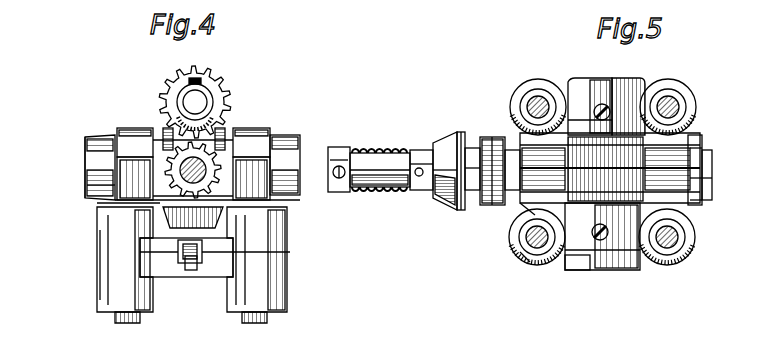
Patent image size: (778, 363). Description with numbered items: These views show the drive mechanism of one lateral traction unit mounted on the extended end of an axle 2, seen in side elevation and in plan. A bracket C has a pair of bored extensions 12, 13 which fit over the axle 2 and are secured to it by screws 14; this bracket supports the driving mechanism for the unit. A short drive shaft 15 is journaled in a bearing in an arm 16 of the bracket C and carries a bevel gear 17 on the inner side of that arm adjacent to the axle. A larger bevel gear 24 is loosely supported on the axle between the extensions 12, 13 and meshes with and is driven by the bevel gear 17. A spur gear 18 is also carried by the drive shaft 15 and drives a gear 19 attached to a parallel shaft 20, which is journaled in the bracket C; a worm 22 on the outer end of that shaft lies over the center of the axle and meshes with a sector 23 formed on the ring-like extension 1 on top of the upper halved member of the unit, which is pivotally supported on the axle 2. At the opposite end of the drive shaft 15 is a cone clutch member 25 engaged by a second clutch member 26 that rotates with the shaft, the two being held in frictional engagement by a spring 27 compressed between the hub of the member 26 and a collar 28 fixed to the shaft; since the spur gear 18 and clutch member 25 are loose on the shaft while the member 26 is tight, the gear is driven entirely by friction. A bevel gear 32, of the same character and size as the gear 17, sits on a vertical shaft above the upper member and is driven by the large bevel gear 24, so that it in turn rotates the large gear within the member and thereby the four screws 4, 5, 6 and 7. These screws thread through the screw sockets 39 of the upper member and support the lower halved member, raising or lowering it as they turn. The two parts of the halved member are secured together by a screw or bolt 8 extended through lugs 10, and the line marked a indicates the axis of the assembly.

In FIG. 4, the ring like extension 1 is at (226, 268).
In FIG. 5, the ring like extension 1 is at (688, 201).
In FIG. 4, the axle 2 is at (100, 137).
In FIG. 5, the axle 2 is at (640, 84).
In FIG. 5, the screw 4 is at (525, 104).
In FIG. 5, the screw 5 is at (520, 252).
In FIG. 5, the screw 6 is at (678, 243).
In FIG. 5, the screw 7 is at (684, 104).
In FIG. 4, the screw or bolt 8 is at (178, 250).
In FIG. 4, the lug 10 is at (196, 266).
In FIG. 4, the bored extension 12 is at (123, 130).
In FIG. 5, the bored extension 12 is at (585, 68).
In FIG. 4, the bored extension 13 is at (244, 133).
In FIG. 5, the bored extension 13 is at (568, 255).
In FIG. 5, the screw 14 is at (605, 104).
In FIG. 4, the drive shaft 15 is at (122, 205).
In FIG. 5, the drive shaft 15 is at (376, 188).
In FIG. 5, the arm 16 is at (512, 142).
In FIG. 5, the bevel gear 17 is at (522, 228).
In FIG. 4, the spur gear 18 is at (128, 142).
In FIG. 4, the gear 19 is at (197, 102).
In FIG. 4, the parallel shaft 20 is at (214, 118).
In FIG. 5, the parallel shaft 20 is at (440, 204).
In FIG. 5, the worm 22 is at (690, 162).
In FIG. 5, the sector 23 is at (690, 178).
In FIG. 4, the bevel gear 24 is at (86, 165).
In FIG. 5, the bevel gear 24 is at (690, 138).
In FIG. 5, the cone clutch member 25 is at (463, 133).
In FIG. 5, the clutch member 26 is at (448, 137).
In FIG. 5, the spring 27 is at (372, 150).
In FIG. 5, the collar 28 is at (338, 150).
In FIG. 4, the bevel gear 32 is at (165, 214).
In FIG. 4, the screw socket 39 is at (192, 265).
In FIG. 4, the axis line a is at (250, 254).
In FIG. 5, the axis line a is at (690, 146).
In FIG. 4, the bracket C is at (86, 186).
In FIG. 5, the bracket C is at (526, 214).